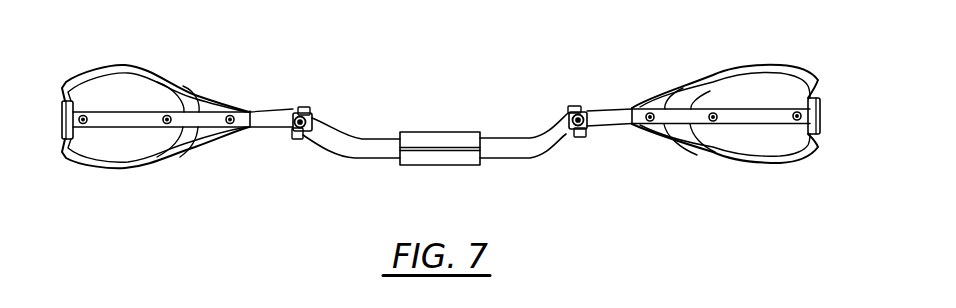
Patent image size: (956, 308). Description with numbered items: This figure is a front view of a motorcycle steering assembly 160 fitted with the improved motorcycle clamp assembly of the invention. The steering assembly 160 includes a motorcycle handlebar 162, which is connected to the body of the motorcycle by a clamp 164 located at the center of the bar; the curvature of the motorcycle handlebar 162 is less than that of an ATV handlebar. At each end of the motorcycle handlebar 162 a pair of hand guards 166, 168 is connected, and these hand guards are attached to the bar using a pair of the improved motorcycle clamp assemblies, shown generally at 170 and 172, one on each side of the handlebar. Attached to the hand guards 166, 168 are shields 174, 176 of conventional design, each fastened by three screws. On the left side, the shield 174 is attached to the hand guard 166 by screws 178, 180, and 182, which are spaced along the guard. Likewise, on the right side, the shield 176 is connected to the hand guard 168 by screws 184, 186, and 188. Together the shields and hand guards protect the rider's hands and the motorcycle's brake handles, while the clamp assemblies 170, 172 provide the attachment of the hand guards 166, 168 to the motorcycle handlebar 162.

The motorcycle steering assembly 160 is at (437, 105).
The motorcycle handlebar 162 is at (357, 157).
The clamp 164 is at (420, 131).
The hand guard 166 is at (273, 116).
The hand guard 168 is at (602, 118).
The motorcycle clamp assembly 170 is at (320, 108).
The motorcycle clamp assembly 172 is at (565, 99).
The shield 174 is at (138, 67).
The shield 176 is at (749, 66).
The screw 178 is at (85, 124).
The screw 180 is at (169, 124).
The screw 182 is at (232, 124).
The screw 184 is at (651, 122).
The screw 186 is at (700, 157).
The screw 188 is at (798, 121).